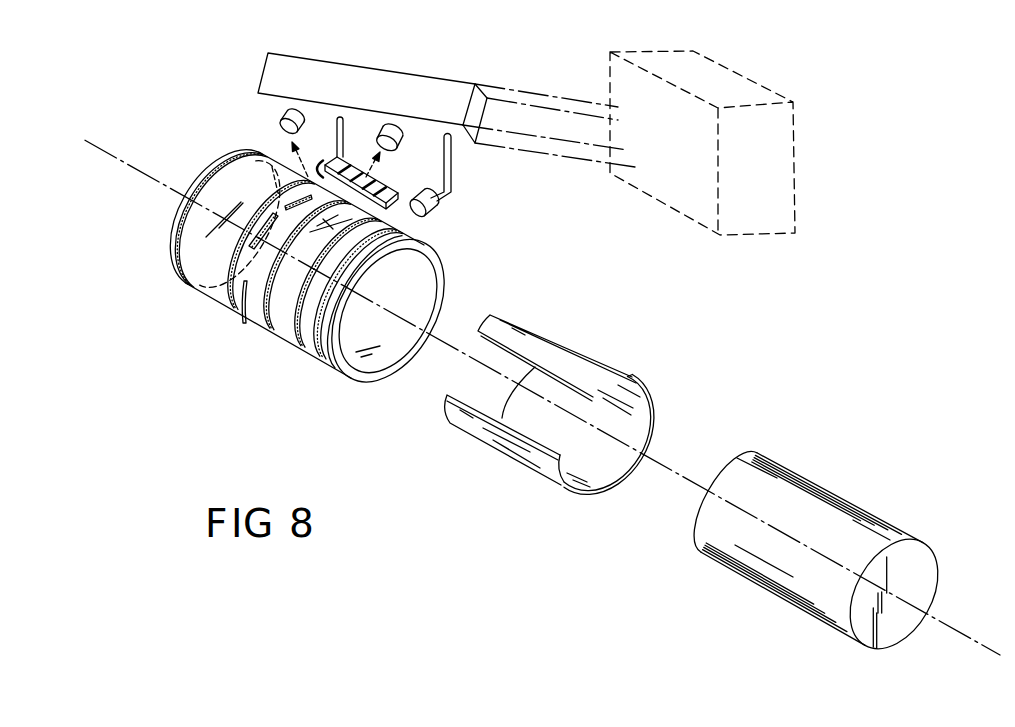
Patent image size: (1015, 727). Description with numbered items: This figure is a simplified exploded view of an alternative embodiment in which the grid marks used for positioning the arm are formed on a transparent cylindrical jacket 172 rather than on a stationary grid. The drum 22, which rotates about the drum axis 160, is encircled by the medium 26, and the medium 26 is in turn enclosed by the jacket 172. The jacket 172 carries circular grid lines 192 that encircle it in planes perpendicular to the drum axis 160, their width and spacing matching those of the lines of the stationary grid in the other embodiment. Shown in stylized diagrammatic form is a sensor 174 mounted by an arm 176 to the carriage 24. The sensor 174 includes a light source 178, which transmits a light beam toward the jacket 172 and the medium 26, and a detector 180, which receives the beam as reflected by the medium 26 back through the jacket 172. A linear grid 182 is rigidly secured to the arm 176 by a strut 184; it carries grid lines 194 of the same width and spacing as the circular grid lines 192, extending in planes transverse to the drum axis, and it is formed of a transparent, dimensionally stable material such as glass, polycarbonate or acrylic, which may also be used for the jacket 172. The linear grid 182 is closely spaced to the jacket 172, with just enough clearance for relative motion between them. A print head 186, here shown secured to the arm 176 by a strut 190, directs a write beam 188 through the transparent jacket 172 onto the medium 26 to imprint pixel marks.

The drum 22 is at (762, 592).
The carriage 24 is at (737, 71).
The medium 26 is at (597, 496).
The drum axis 160 is at (944, 614).
The transparent cylindrical jacket 172 is at (364, 372).
The sensor 174 is at (257, 123).
The arm 176 is at (397, 73).
The light source 178 is at (276, 128).
The detector 180 is at (393, 143).
The linear grid 182 is at (317, 159).
The strut 184 is at (339, 131).
The print head 186 is at (430, 212).
The write beam 188 is at (396, 221).
The strut 190 is at (455, 172).
The circular grid lines 192 is at (318, 350).
The grid lines 194 is at (357, 165).